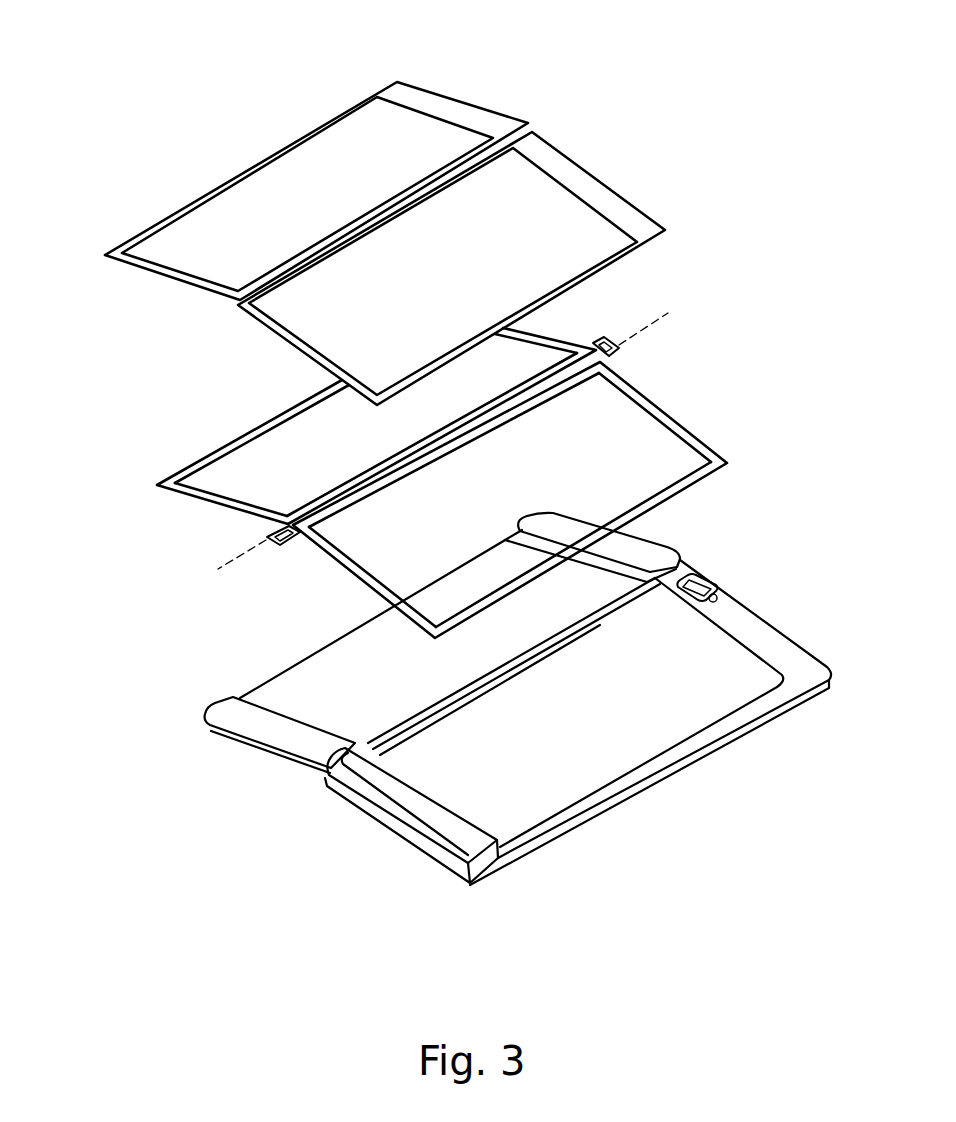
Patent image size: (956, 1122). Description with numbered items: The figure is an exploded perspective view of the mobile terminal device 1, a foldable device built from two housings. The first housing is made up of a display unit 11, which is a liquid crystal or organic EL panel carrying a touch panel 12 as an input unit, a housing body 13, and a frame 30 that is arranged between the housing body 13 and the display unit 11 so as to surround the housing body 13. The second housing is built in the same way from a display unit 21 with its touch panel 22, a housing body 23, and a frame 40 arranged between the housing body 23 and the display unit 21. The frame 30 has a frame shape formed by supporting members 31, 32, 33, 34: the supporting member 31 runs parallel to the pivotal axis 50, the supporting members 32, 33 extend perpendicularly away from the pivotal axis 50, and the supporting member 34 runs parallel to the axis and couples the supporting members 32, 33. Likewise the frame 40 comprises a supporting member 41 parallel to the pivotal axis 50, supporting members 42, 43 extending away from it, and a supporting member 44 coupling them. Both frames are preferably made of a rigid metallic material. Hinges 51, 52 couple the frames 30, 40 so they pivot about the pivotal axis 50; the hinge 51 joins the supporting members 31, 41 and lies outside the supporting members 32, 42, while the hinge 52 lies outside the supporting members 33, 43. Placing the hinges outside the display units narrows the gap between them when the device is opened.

The mobile terminal device 1 is at (209, 92).
The display unit 11 is at (470, 77).
The touch panel 12 is at (380, 125).
The housing body 13 is at (272, 735).
The display unit 21 is at (598, 152).
The touch panel 22 is at (612, 238).
The housing body 23 is at (752, 622).
The frame 30 is at (187, 534).
The supporting member 31 is at (407, 459).
The supporting member 32 is at (543, 338).
The supporting member 33 is at (218, 500).
The supporting member 34 is at (260, 428).
The frame 40 is at (316, 604).
The supporting member 41 is at (506, 413).
The supporting member 42 is at (660, 415).
The supporting member 43 is at (358, 568).
The supporting member 44 is at (687, 490).
The pivotal axis 50 is at (668, 313).
The hinge 51 is at (620, 354).
The hinge 52 is at (281, 541).